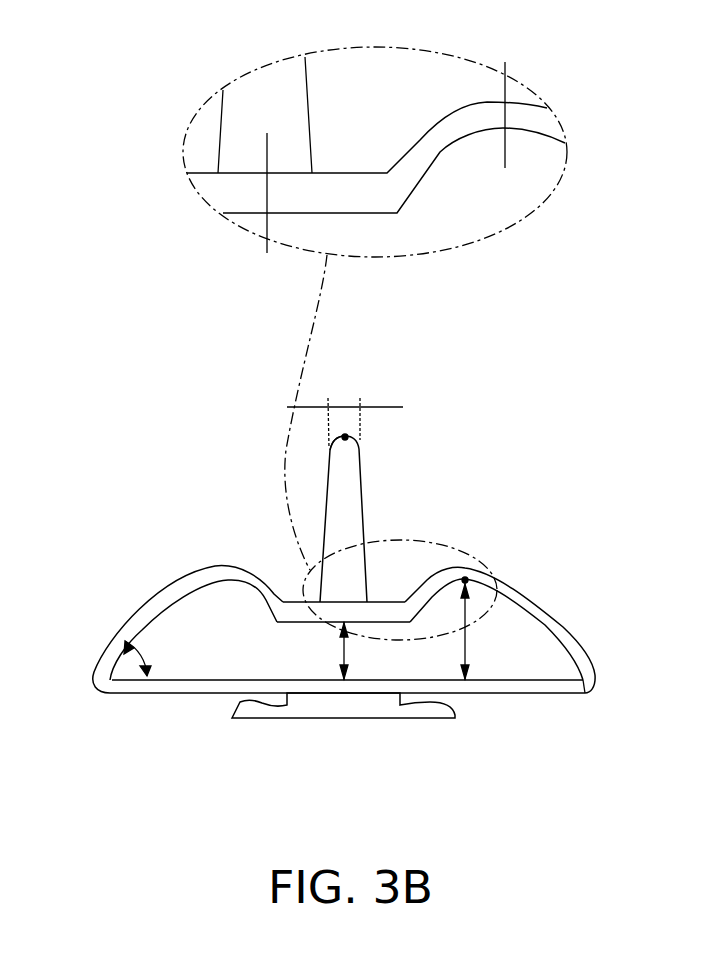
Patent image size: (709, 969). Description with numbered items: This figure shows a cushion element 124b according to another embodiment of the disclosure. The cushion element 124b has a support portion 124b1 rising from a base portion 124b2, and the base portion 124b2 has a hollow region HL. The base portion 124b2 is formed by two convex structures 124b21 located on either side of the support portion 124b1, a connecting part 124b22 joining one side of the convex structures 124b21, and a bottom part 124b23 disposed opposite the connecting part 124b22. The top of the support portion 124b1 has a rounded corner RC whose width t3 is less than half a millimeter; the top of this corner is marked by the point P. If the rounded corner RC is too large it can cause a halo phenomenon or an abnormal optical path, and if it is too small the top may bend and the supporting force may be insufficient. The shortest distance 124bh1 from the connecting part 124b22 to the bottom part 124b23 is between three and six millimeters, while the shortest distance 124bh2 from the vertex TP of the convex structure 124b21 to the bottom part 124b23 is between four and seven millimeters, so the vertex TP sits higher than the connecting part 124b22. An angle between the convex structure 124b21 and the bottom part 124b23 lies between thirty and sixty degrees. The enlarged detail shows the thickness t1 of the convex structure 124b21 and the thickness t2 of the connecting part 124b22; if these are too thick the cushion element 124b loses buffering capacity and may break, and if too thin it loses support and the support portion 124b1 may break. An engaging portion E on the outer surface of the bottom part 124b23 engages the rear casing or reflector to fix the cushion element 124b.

The cushion element 124b is at (151, 267).
The support portion 124b1 is at (365, 514).
The base portion 124b2 is at (381, 588).
The convex structure 124b21 is at (157, 590).
The connecting part 124b22 is at (294, 595).
The bottom part 124b23 is at (164, 676).
The shortest distance from connecting part to bottom part 124bh1 is at (347, 650).
The shortest distance from vertex to bottom part 124bh2 is at (470, 628).
The thickness of convex structure t1 is at (505, 103).
The thickness of connecting part t2 is at (267, 172).
The width of rounded corner t3 is at (324, 407).
The top point of rib P is at (347, 438).
The vertex TP is at (466, 577).
The rounded corner RC is at (333, 437).
The hollow region HL is at (560, 663).
The engaging portion E is at (345, 720).